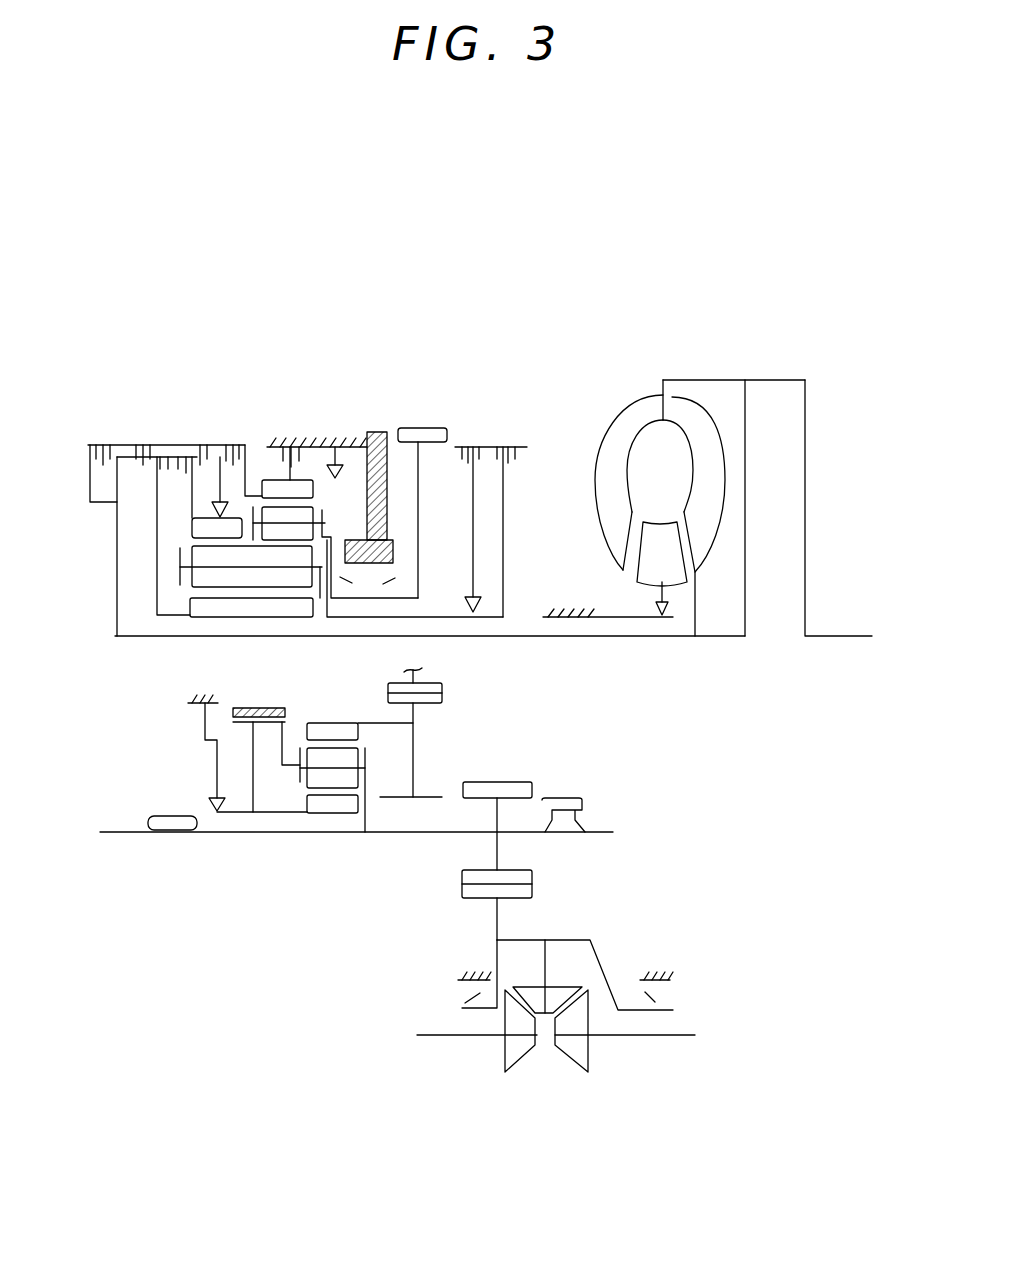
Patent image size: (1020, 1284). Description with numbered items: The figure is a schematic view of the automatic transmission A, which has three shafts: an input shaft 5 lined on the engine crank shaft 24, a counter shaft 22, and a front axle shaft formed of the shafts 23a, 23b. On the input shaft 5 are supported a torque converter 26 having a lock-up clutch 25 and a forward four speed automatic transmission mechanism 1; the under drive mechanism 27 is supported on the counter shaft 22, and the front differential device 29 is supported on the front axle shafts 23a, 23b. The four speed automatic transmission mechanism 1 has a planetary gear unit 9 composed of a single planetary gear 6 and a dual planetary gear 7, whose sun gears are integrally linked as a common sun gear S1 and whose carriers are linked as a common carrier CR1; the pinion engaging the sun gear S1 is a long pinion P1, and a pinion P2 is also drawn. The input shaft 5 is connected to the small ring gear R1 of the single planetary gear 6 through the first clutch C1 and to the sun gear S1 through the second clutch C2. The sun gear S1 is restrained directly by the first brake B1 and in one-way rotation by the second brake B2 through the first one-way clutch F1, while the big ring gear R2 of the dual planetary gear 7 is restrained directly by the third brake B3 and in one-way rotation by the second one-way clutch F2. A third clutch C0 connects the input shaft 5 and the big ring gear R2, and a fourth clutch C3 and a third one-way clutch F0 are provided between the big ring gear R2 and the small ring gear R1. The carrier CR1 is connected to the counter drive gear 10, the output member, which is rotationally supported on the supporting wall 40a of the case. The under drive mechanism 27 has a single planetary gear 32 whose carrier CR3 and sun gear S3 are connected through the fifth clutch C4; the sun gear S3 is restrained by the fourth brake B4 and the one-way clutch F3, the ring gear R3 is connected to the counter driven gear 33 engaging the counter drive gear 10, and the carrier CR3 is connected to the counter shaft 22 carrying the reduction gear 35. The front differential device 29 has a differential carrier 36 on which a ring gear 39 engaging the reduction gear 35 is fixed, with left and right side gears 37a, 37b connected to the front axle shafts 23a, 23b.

The forward four speed automatic transmission mechanism 1 is at (134, 376).
The automatic transmission A is at (190, 371).
The input shaft 5 is at (571, 636).
The single planetary gear 6 is at (265, 466).
The dual planetary gear 7 is at (233, 486).
The planetary gear unit 9 is at (302, 323).
The counter drive gear 10 is at (427, 428).
The counter shaft 22 is at (227, 833).
The left front axle shaft 23a is at (460, 1038).
The right front axle shaft 23b is at (670, 1037).
The engine crank shaft 24 is at (837, 636).
The lock-up clutch 25 is at (757, 382).
The torque converter 26 is at (643, 386).
The under drive mechanism 27 is at (197, 750).
The front differential device 29 is at (555, 1068).
The single planetary gear 32 is at (336, 716).
The counter driven gear 33 is at (437, 698).
The reduction gear 35 is at (508, 782).
The differential carrier 36 is at (565, 940).
The left side gear 37a is at (515, 1068).
The right side gear 37b is at (573, 1063).
The ring gear 39 is at (468, 893).
The supporting wall 40a is at (392, 540).
The first brake B1 is at (500, 432).
The second brake B2 is at (470, 447).
The third brake B3 is at (276, 447).
The fourth (under drive) brake B4 is at (273, 697).
The third clutch C0 is at (84, 445).
The first (forward) clutch C1 is at (193, 443).
The second (reverse) clutch C2 is at (148, 443).
The fourth clutch C3 is at (219, 445).
The fifth (direct) clutch C4 is at (272, 737).
The third one-way clutch F0 is at (193, 510).
The first one-way clutch F1 is at (466, 604).
The second one-way clutch F2 is at (335, 447).
The one-way clutch F3 is at (210, 811).
The ring gear (small ring gear) R1 is at (197, 530).
The long pinion P1 is at (200, 573).
The common sun gear S1 is at (250, 612).
The common carrier CR1 is at (318, 582).
The ring gear (big ring gear) R2 is at (290, 488).
The pinion of second planetary P2 is at (300, 533).
The ring gear R3 is at (350, 730).
The sun gear S3 is at (323, 813).
The carrier CR3 is at (370, 777).